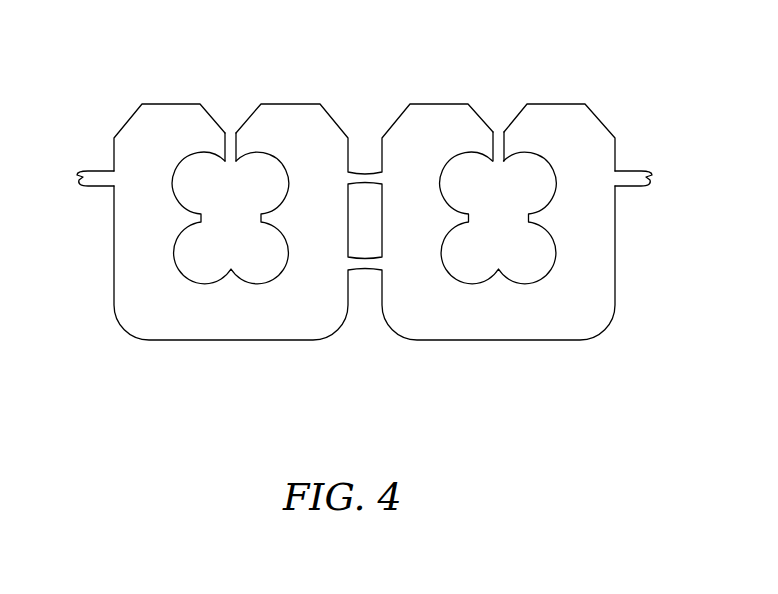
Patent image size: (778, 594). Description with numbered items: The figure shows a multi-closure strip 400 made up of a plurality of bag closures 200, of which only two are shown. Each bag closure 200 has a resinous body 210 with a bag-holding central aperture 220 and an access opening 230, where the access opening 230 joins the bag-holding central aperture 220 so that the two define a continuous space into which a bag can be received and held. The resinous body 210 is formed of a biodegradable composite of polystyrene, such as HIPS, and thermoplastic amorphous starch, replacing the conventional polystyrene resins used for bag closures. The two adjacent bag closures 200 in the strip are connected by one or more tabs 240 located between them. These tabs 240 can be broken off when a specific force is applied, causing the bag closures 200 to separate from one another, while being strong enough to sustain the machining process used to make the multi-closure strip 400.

The bag closure 200 is at (70, 161).
The resinous body 210 is at (128, 229).
The bag-holding central aperture 220 is at (249, 229).
The access opening 230 is at (232, 124).
The tab 240 is at (367, 170).
The multi-closure strip 400 is at (359, 230).